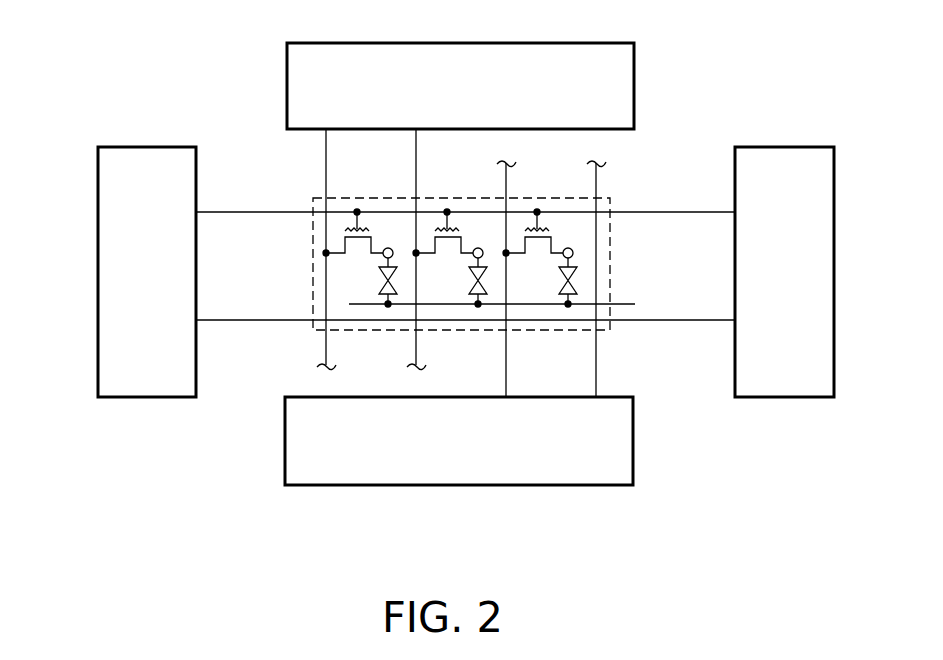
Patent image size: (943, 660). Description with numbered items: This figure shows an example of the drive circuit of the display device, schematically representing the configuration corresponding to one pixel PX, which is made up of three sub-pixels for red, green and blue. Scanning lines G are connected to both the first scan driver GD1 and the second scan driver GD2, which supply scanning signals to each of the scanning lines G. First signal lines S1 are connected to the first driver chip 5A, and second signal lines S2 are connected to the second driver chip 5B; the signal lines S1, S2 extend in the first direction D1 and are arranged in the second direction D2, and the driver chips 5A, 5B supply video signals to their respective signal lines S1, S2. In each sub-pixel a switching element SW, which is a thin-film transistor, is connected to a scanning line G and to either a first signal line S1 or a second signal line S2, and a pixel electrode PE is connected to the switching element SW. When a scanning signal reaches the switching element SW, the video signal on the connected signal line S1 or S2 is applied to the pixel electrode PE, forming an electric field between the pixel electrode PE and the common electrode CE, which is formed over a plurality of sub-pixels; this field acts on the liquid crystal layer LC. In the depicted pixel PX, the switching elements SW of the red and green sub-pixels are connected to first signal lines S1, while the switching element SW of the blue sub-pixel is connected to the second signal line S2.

The first driver chip 5A is at (287, 88).
The second driver chip 5B is at (285, 445).
The first scan driver GD1 is at (98, 270).
The second scan driver GD2 is at (836, 268).
The scanning line G is at (229, 210).
The first signal line S1 is at (330, 352).
The second signal line S2 is at (509, 375).
The pixel PX is at (320, 253).
The switching element SW is at (554, 239).
The pixel electrode PE is at (574, 253).
The liquid crystal layer LC is at (578, 284).
The common electrode CE is at (538, 306).
The first direction D1 is at (45, 37).
The second direction D2 is at (45, 37).